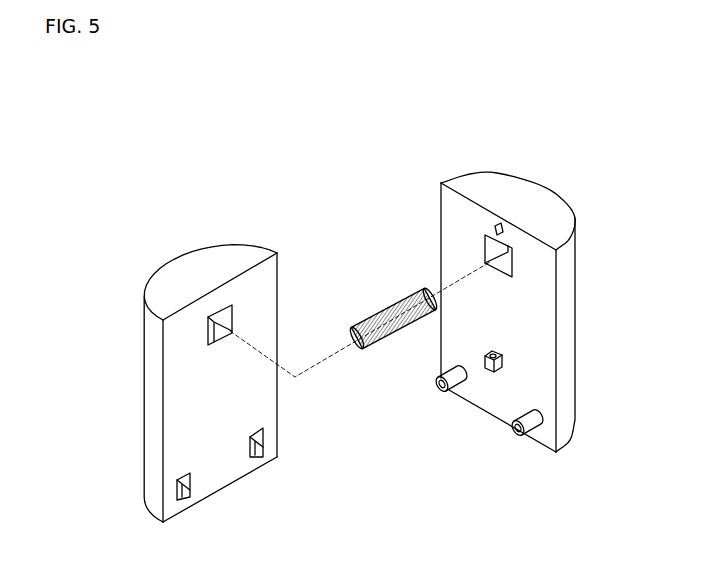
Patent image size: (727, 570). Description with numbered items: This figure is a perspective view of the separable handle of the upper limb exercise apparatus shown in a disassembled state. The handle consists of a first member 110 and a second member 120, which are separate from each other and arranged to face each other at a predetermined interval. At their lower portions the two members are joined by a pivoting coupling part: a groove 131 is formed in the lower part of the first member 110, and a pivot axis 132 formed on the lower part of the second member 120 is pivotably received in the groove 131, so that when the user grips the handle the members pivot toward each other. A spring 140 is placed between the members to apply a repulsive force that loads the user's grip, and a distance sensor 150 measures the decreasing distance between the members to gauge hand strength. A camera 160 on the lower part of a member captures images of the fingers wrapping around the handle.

The first member 110 is at (181, 263).
The second member 120 is at (532, 198).
The groove 131 is at (190, 487).
The pivot axis 132 is at (458, 384).
The spring 140 is at (377, 317).
The distance sensor 150 is at (495, 226).
The camera 160 is at (503, 364).